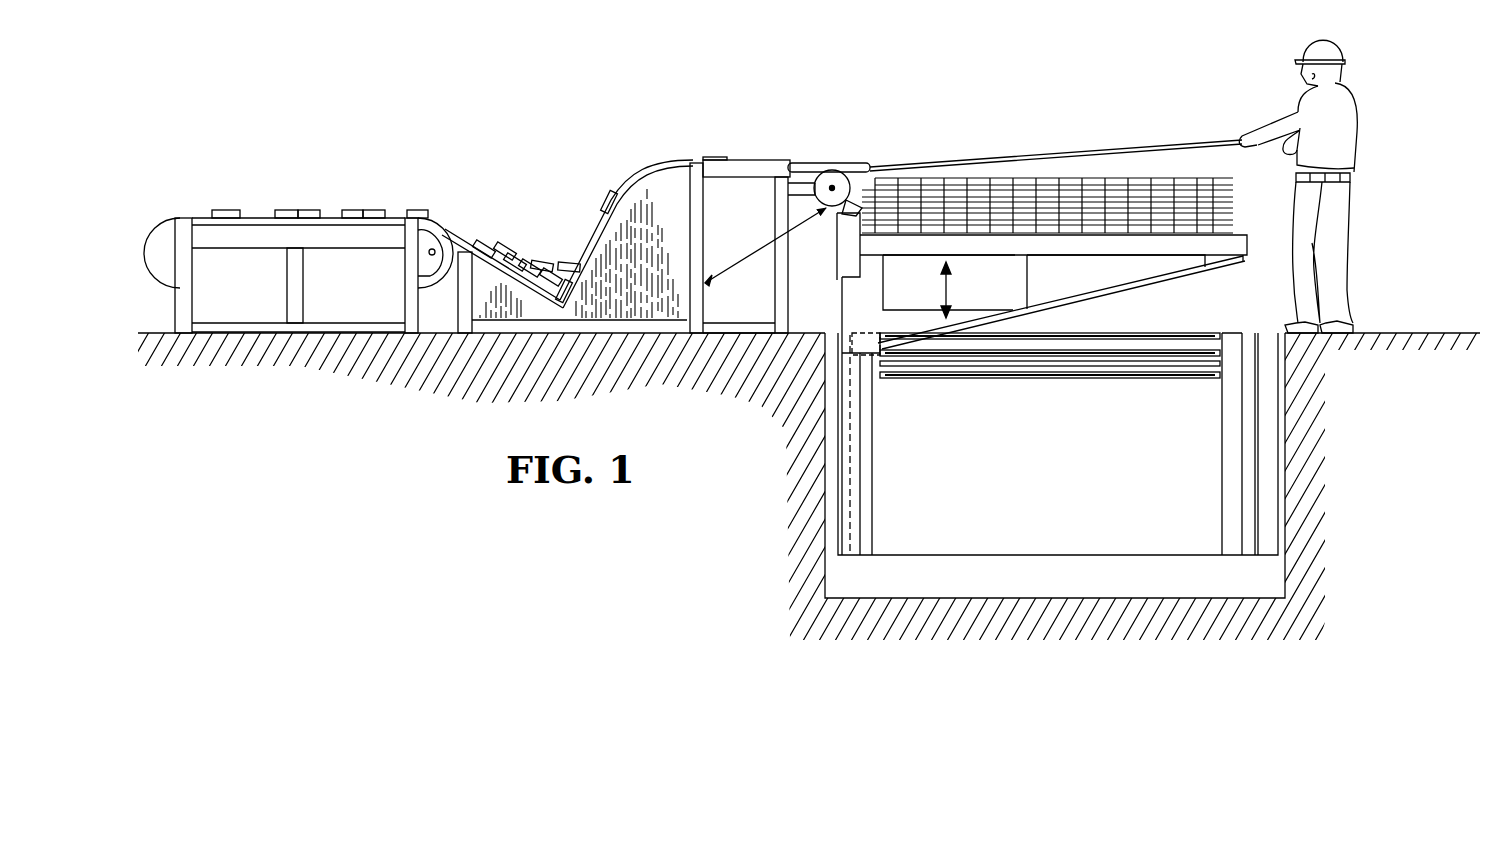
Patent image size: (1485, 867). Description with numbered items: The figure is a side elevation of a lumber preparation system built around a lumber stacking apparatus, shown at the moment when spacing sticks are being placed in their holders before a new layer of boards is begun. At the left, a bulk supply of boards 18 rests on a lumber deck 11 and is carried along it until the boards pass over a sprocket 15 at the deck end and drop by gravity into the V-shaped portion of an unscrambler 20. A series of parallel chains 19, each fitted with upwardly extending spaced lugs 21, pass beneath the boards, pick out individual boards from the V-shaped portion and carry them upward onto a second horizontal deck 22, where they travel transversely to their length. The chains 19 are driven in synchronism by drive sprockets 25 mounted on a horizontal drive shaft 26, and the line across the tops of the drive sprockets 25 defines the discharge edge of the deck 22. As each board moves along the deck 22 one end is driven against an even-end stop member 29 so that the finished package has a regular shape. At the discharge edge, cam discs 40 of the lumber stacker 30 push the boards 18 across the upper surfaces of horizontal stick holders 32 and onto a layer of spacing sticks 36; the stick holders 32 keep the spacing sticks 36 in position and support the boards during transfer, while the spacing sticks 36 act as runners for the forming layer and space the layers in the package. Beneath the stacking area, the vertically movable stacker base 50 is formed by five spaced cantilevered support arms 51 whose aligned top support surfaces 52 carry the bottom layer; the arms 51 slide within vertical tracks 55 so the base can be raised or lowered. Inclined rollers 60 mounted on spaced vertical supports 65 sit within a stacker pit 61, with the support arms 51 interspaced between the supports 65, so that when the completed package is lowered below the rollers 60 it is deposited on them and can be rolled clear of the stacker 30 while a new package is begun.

The lumber deck 11 is at (200, 210).
The sprocket 15 is at (435, 226).
The boards 18 is at (304, 210).
The chains 19 is at (741, 262).
The unscrambler 20 is at (567, 207).
The lugs 21 is at (607, 223).
The second horizontal deck 22 is at (740, 207).
The drive sprockets 25 is at (820, 200).
The horizontal drive shaft 26 is at (852, 180).
The even-end stop member 29 is at (730, 168).
The lumber stacker 30 is at (813, 152).
The stick holders 32 is at (849, 165).
The spacing sticks 36 is at (1034, 157).
The cam discs 40 is at (843, 218).
The stacker base 50 is at (1250, 256).
The cantilevered support arms 51 is at (1089, 302).
The top support surfaces 52 is at (1237, 233).
The vertical tracks 55 is at (843, 268).
The rollers 60 is at (1057, 360).
The stacker pit 61 is at (1200, 477).
The vertical supports 65 is at (870, 520).